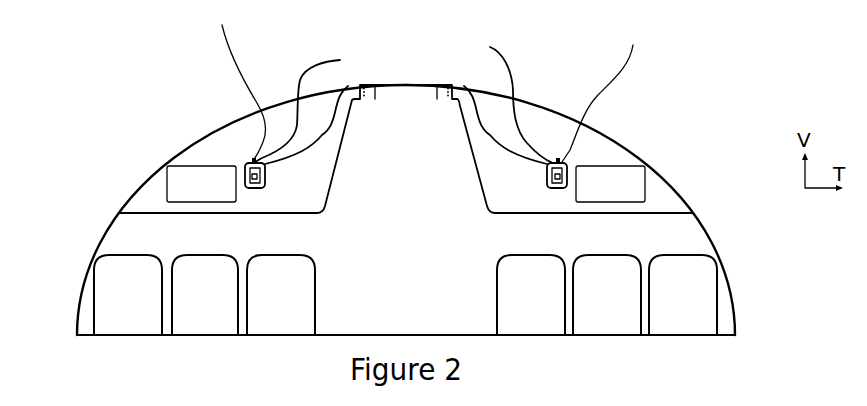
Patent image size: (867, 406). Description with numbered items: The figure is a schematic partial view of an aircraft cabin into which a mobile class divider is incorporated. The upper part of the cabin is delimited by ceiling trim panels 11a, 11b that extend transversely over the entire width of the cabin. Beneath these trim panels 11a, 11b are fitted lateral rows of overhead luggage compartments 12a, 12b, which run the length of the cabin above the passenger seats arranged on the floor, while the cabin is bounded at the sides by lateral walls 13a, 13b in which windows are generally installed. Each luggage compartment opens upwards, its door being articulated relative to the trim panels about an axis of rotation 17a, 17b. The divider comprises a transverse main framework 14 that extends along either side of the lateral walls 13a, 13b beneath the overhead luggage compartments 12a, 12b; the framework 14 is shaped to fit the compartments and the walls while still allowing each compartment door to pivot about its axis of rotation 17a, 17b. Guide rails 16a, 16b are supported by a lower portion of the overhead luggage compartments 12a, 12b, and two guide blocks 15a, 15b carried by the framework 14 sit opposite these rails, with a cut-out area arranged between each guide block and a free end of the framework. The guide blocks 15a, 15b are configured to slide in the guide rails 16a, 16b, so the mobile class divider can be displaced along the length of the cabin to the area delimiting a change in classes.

The ceiling trim panel 11a is at (235, 81).
The ceiling trim panel 11b is at (610, 92).
The overhead luggage compartment 12a is at (275, 122).
The overhead luggage compartment 12b is at (530, 117).
The lateral wall 13a is at (105, 232).
The lateral wall 13b is at (710, 236).
The transverse main framework 14 is at (449, 179).
The guide block 15a is at (253, 161).
The guide block 15b is at (567, 162).
The guide rail 16a is at (253, 160).
The guide rail 16b is at (558, 160).
The axis of rotation 17a is at (340, 59).
The axis of rotation 17b is at (490, 45).